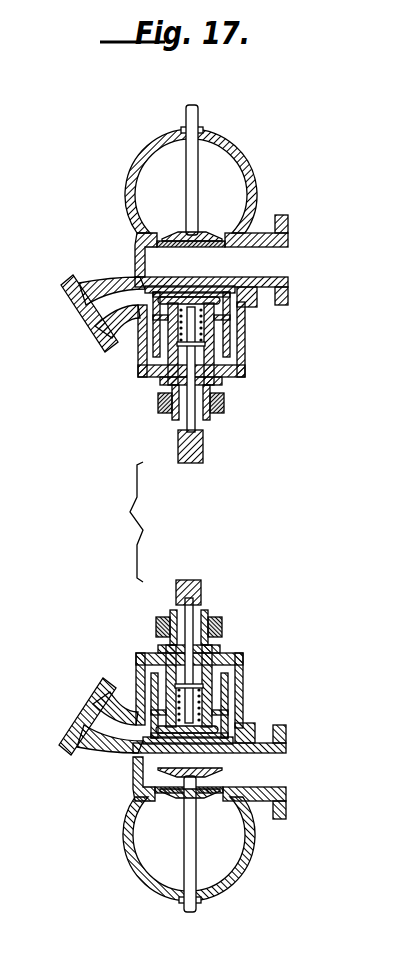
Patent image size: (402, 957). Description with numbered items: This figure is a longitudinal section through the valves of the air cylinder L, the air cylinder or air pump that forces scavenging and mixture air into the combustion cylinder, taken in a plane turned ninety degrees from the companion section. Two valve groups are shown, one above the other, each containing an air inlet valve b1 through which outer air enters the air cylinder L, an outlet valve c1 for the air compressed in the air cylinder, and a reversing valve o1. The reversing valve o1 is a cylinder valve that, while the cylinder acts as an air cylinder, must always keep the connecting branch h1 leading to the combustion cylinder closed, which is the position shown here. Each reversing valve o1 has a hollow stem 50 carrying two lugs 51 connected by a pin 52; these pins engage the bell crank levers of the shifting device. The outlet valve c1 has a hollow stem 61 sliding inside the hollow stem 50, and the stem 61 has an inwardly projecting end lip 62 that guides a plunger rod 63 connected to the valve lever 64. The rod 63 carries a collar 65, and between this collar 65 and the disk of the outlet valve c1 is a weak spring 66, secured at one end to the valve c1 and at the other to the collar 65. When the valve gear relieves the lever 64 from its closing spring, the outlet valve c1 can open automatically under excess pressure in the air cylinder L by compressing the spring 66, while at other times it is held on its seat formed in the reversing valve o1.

The air inlet valve b1 is at (192, 192).
The reversing valve o1 is at (158, 283).
The outlet valve c1 is at (200, 298).
The air cylinder L is at (282, 264).
The connecting branch h1 is at (90, 315).
The collar 65 is at (156, 352).
The weak spring 66 is at (229, 335).
The end lip 62 is at (162, 372).
The hollow stem 61 is at (216, 362).
The hollow stem 50 is at (218, 380).
The pin 52 is at (160, 402).
The lug 51 is at (173, 414).
The plunger rod 63 is at (193, 400).
The valve lever 64 is at (192, 463).